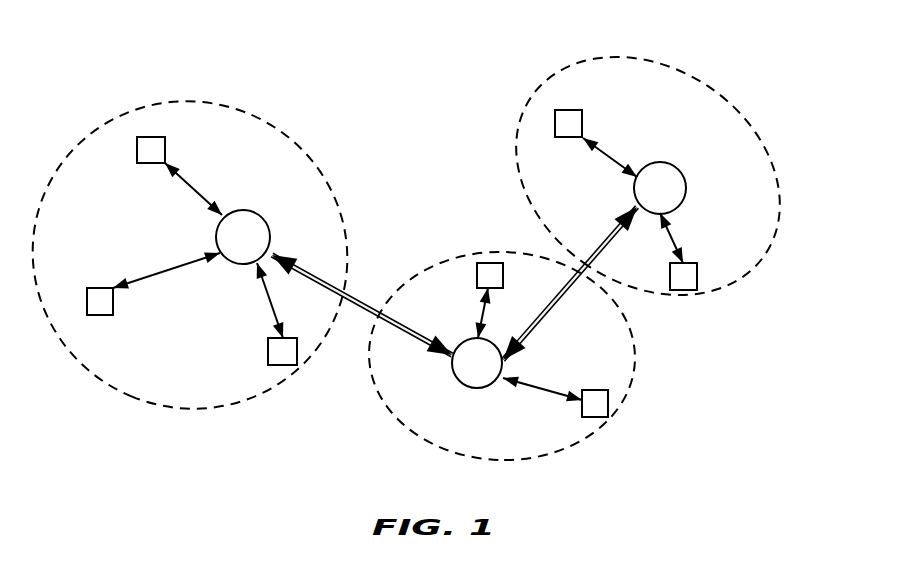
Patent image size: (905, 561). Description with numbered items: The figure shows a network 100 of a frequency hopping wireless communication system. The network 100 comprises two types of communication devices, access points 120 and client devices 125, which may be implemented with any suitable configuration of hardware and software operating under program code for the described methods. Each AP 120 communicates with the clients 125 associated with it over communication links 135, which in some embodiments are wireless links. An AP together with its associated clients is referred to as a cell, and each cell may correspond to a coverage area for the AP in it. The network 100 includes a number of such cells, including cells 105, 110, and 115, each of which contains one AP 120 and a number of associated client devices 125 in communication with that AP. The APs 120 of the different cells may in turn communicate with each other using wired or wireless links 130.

The network 100 is at (70, 18).
The cell 105 is at (98, 130).
The cell 110 is at (632, 375).
The cell 115 is at (528, 87).
The access point 120 is at (238, 216).
The client device 125 is at (165, 141).
The wired or wireless link 130 is at (363, 303).
The communication link 135 is at (157, 266).